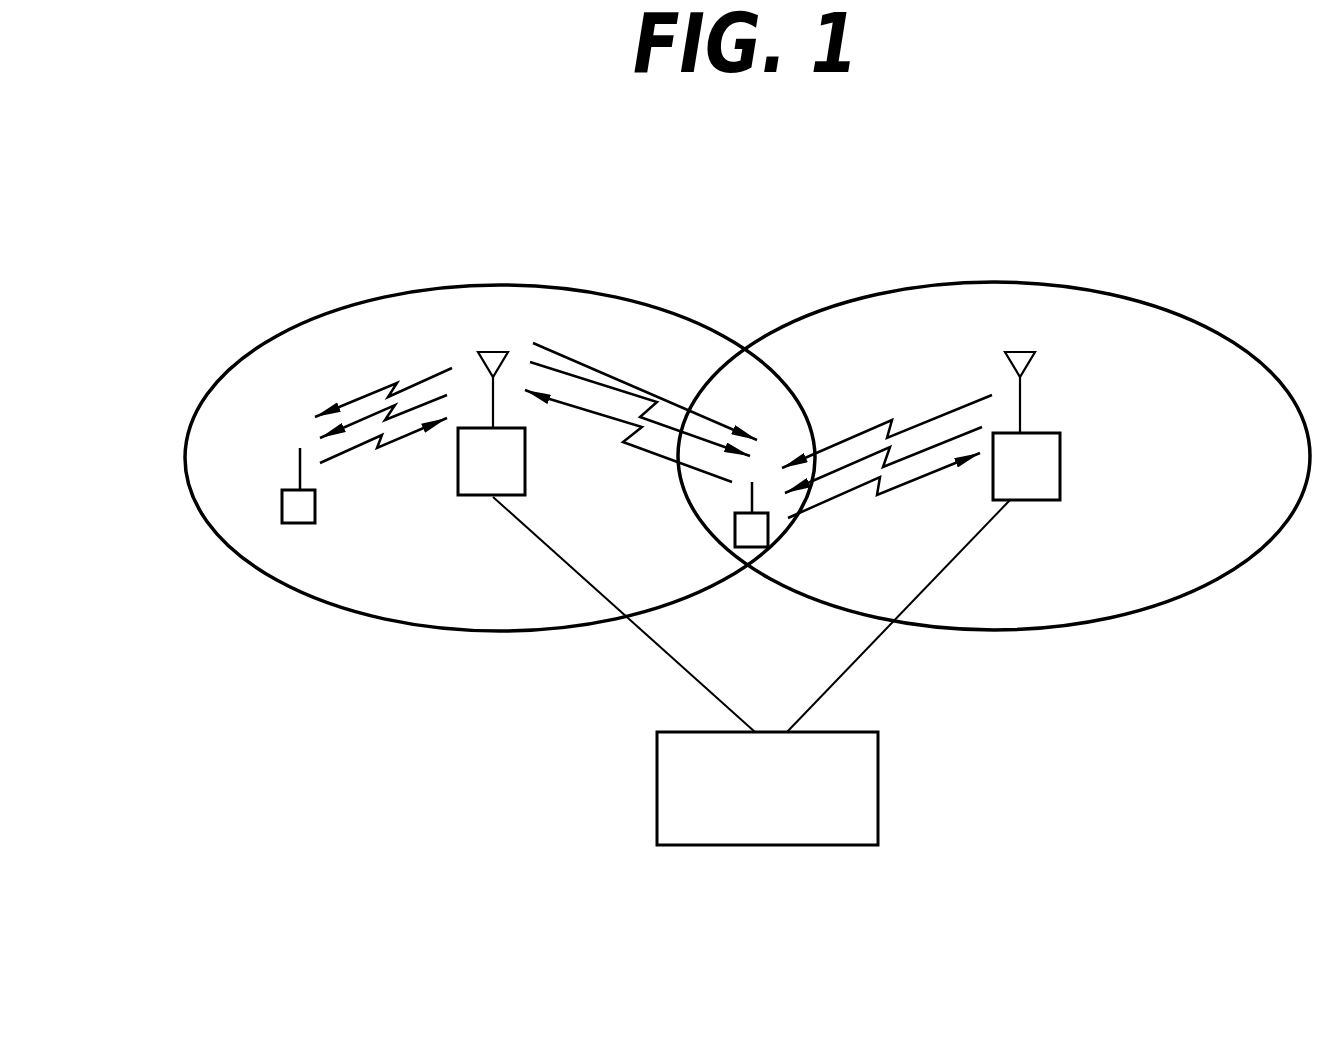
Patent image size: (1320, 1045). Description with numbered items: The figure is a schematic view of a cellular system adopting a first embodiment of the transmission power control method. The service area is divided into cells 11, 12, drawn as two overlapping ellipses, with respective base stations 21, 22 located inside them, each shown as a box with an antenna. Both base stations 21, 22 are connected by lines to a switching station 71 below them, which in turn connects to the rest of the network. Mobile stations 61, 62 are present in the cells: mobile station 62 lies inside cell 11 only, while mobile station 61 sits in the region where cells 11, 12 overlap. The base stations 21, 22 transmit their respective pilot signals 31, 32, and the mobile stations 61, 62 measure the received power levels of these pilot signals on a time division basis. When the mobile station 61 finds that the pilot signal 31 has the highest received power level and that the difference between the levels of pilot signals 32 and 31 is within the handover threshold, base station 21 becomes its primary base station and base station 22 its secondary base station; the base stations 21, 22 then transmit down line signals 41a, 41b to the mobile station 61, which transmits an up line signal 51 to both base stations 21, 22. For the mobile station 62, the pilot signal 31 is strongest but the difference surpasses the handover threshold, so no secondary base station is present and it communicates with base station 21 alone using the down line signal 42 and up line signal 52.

The cell 11 is at (457, 632).
The cell 12 is at (1084, 630).
The base station 21 is at (495, 497).
The base station 22 is at (1062, 470).
The pilot signal 31 is at (352, 388).
The pilot signal 32 is at (838, 439).
The down line signal 41a is at (670, 423).
The down line signal 41b is at (931, 445).
The down line signal 42 is at (419, 386).
The up line signal 51 is at (640, 455).
The up line signal 52 is at (373, 442).
The mobile station 61 is at (752, 547).
The mobile station 62 is at (282, 503).
The switching station 71 is at (880, 772).